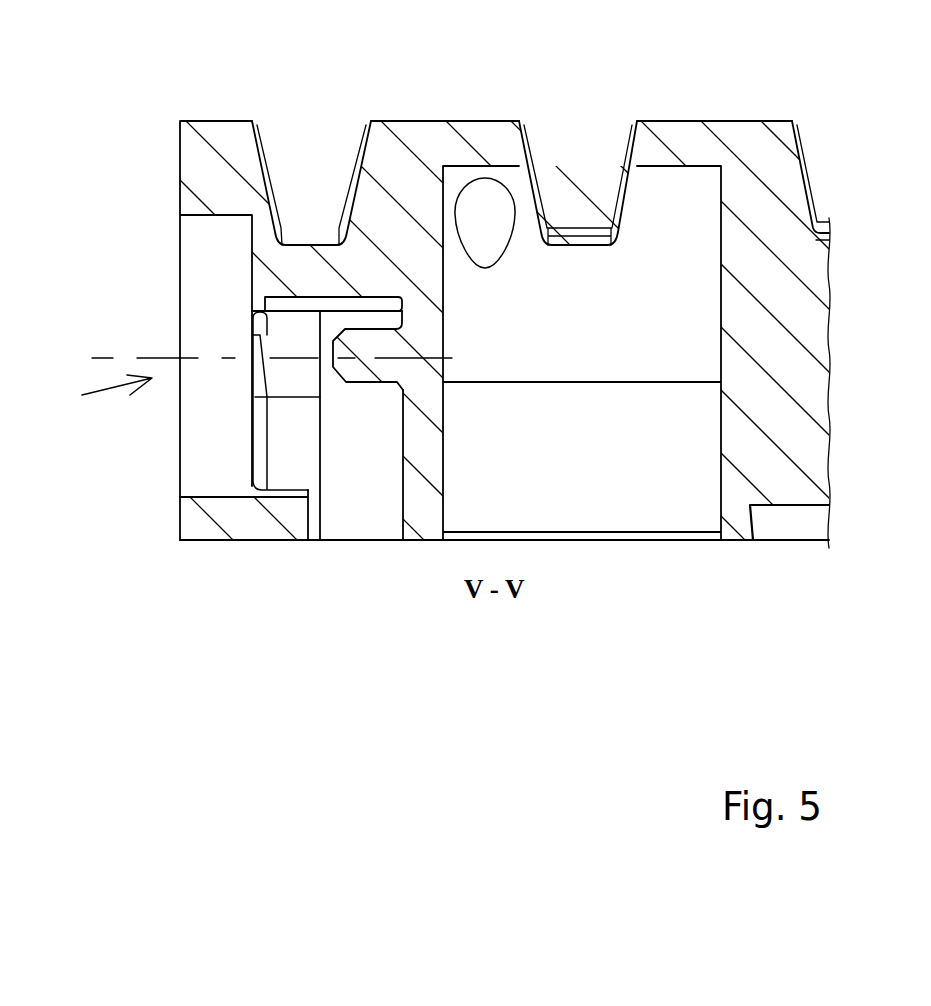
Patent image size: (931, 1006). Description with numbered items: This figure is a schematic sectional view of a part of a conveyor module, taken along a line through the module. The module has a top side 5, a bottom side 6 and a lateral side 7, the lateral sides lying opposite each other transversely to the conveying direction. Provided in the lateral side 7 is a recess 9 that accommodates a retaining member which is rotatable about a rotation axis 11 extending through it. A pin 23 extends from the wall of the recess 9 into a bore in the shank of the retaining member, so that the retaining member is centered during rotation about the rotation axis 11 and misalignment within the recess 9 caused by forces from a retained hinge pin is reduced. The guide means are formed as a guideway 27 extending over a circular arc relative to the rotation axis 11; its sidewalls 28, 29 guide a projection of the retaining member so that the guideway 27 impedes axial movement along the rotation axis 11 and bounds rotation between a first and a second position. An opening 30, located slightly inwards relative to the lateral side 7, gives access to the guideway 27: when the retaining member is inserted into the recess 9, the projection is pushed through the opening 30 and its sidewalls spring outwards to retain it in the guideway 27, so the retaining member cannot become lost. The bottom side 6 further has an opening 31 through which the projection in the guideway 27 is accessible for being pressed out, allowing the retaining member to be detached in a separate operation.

The top side 5 is at (405, 121).
The bottom side 6 is at (270, 541).
The lateral side 7 is at (180, 164).
The recess 9 is at (101, 392).
The rotation axis 11 is at (107, 358).
The pin 23 is at (363, 367).
The guideway 27 is at (347, 455).
The sidewall 28 is at (322, 450).
The sidewall 29 is at (403, 452).
The opening 30 is at (280, 446).
The opening 31 is at (350, 527).